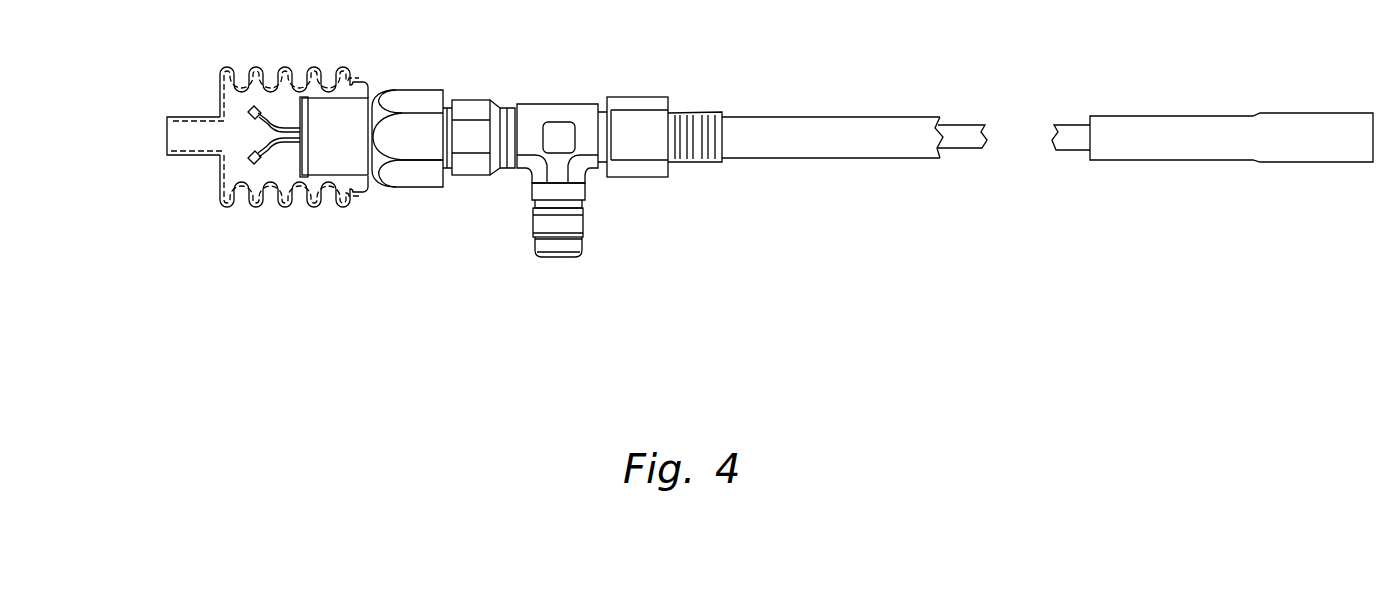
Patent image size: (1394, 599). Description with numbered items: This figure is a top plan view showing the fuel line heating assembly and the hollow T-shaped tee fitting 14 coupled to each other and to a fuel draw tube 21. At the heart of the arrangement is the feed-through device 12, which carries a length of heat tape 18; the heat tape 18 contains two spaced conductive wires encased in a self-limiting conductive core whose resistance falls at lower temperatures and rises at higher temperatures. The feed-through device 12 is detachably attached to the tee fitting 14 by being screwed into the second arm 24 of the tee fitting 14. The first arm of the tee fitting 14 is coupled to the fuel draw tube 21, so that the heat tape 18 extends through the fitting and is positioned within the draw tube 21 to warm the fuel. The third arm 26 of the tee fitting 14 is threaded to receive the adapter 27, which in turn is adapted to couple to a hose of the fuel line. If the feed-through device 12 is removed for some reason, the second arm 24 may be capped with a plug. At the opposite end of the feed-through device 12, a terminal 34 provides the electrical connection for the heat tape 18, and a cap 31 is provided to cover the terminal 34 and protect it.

The feed-through device 12 is at (425, 98).
The tee fitting 14 is at (550, 103).
The heat tape 18 is at (957, 143).
The fuel draw tube 21 is at (800, 143).
The second arm 24 is at (476, 170).
The third arm 26 is at (583, 190).
The adapter 27 is at (538, 222).
The cap 31 is at (197, 157).
The terminal 34 is at (258, 107).